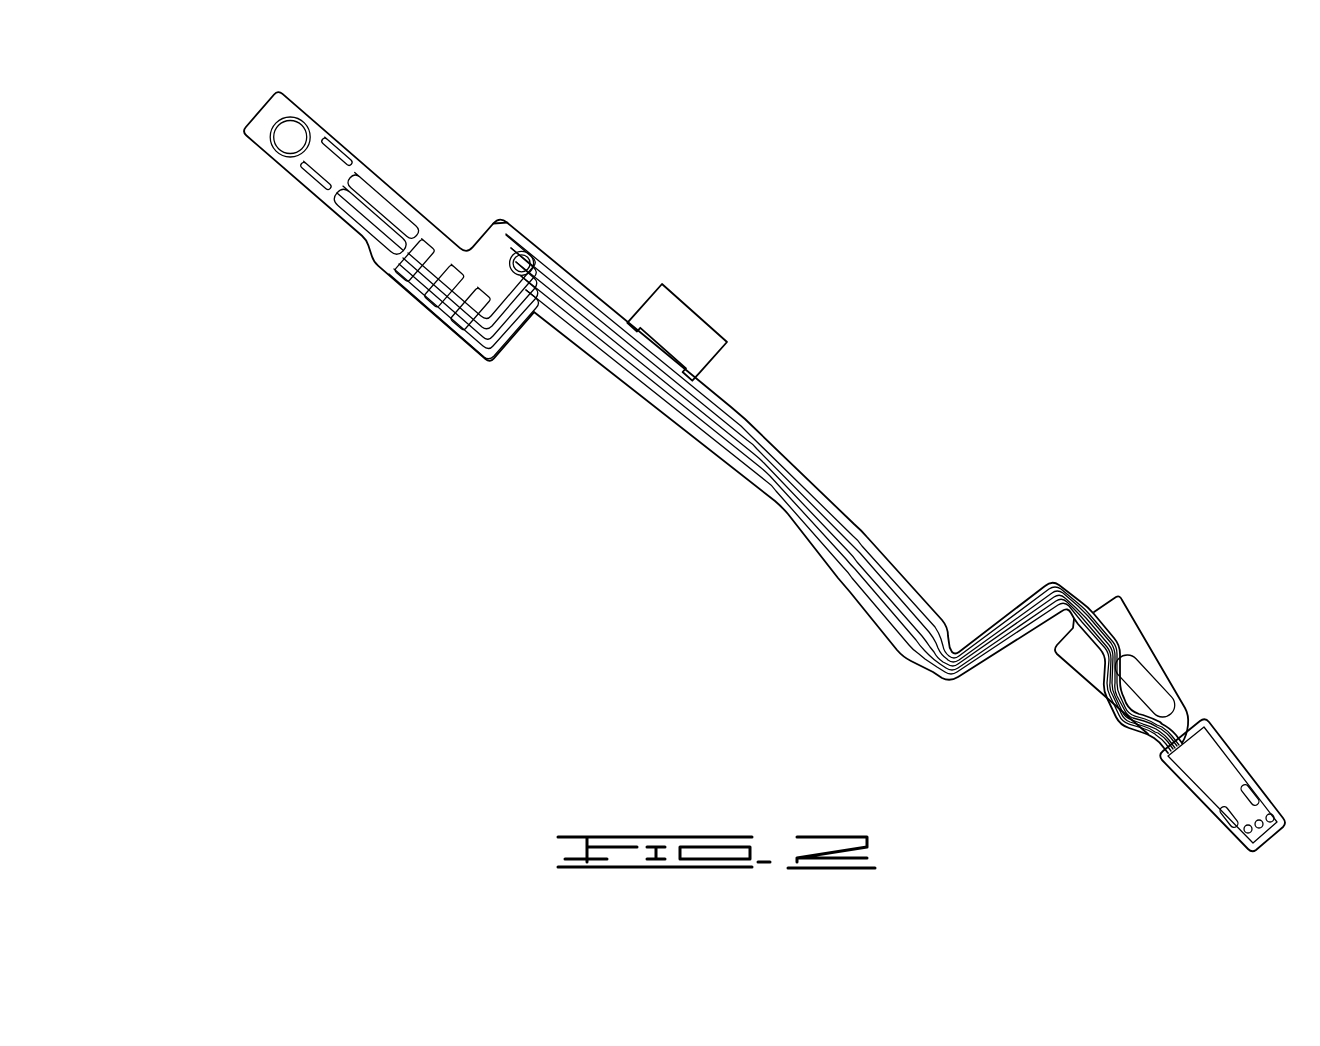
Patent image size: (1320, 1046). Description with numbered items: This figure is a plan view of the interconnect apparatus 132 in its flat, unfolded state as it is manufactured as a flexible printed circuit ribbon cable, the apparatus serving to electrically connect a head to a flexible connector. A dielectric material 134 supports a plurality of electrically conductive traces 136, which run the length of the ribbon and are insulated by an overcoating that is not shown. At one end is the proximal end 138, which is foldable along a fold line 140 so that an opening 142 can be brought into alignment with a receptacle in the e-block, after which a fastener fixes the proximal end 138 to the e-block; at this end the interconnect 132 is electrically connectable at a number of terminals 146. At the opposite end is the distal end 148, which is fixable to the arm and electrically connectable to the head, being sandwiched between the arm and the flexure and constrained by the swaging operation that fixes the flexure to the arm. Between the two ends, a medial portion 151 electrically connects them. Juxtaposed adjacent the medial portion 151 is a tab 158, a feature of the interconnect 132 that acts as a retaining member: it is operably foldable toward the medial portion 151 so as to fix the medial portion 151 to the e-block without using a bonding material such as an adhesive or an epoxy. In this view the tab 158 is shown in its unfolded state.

The interconnect apparatus 132 is at (319, 208).
The dielectric material 134 is at (713, 468).
The electrically conductive traces 136 is at (802, 485).
The proximal end 138 is at (361, 213).
The fold line 140 is at (492, 260).
The opening 142 is at (290, 150).
The terminals 146 is at (417, 258).
The distal end 148 is at (1182, 636).
The medial portion 151 is at (785, 486).
The tab 158 is at (697, 310).